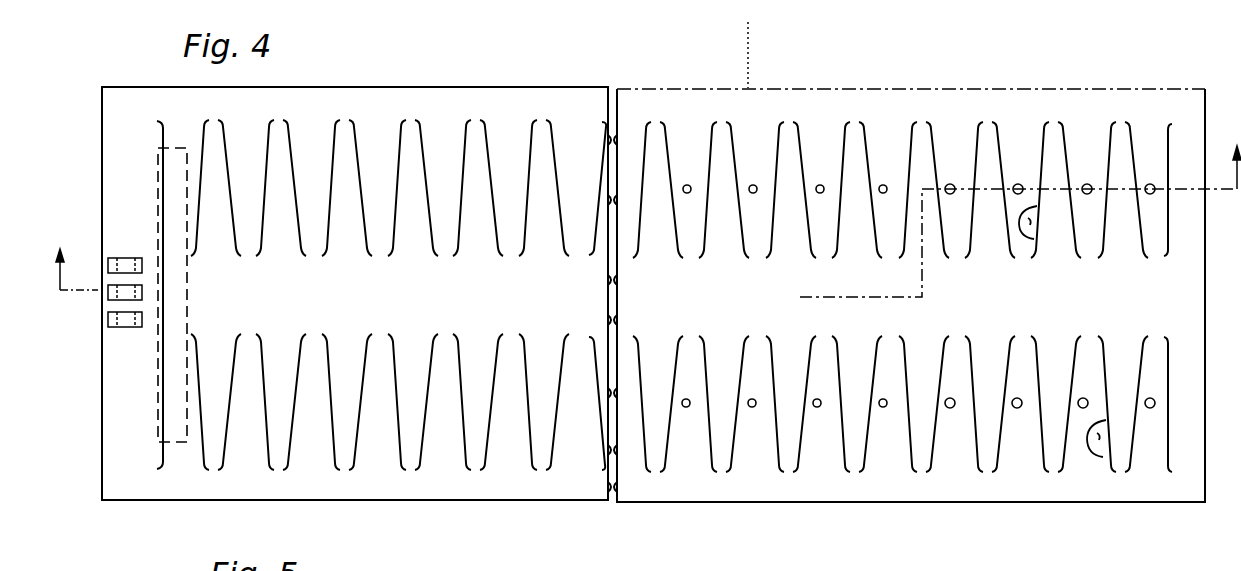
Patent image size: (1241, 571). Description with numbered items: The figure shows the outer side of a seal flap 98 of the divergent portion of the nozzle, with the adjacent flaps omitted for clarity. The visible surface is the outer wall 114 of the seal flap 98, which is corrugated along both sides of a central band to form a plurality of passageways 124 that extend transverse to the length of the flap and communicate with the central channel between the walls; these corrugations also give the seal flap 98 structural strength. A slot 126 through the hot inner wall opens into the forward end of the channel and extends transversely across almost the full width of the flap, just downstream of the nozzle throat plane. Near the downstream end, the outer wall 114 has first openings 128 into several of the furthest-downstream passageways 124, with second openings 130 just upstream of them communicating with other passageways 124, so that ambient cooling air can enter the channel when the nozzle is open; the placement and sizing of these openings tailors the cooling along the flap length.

The seal flap 98 is at (826, 86).
The outer wall 114 is at (475, 310).
The passageways 124 is at (1104, 446).
The slot 126 is at (157, 376).
The first openings 128 is at (1087, 184).
The second openings 130 is at (703, 540).